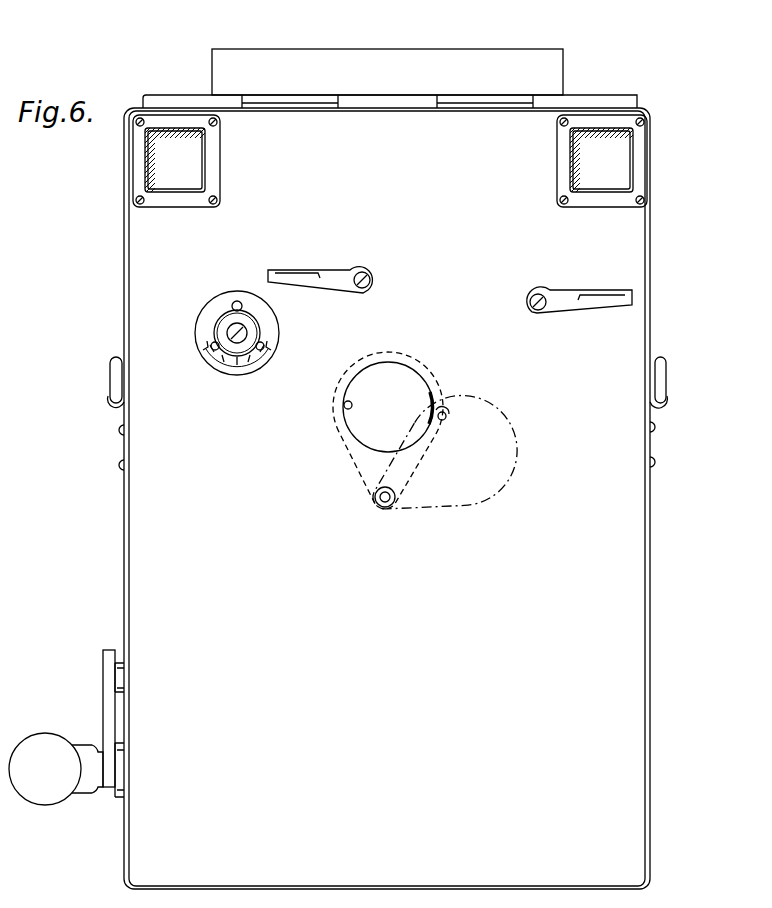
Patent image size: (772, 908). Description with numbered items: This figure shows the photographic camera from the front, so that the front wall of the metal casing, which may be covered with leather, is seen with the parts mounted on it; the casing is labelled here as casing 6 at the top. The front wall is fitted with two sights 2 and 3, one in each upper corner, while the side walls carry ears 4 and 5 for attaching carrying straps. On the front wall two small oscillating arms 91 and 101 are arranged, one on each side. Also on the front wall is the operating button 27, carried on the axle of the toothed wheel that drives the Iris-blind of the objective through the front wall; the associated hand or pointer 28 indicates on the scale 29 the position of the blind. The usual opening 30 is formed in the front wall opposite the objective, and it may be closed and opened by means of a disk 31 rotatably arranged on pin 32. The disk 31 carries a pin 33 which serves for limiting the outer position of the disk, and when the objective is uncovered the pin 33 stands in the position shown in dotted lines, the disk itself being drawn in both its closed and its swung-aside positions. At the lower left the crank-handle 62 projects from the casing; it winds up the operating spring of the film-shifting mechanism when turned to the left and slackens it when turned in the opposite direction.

The sight 2 is at (163, 155).
The sight 3 is at (623, 145).
The ear 4 is at (112, 373).
The ear 5 is at (662, 372).
The top cover 6 is at (387, 72).
The operating button 27 is at (222, 322).
The pointer 28 is at (239, 358).
The scale 29 is at (269, 360).
The opening 30 is at (388, 407).
The disk 31 is at (342, 466).
The pin 32 is at (386, 508).
The pin 33 is at (352, 403).
The crank-handle 62 is at (110, 708).
The oscillating arm 91 is at (570, 305).
The oscillating arm 101 is at (344, 284).